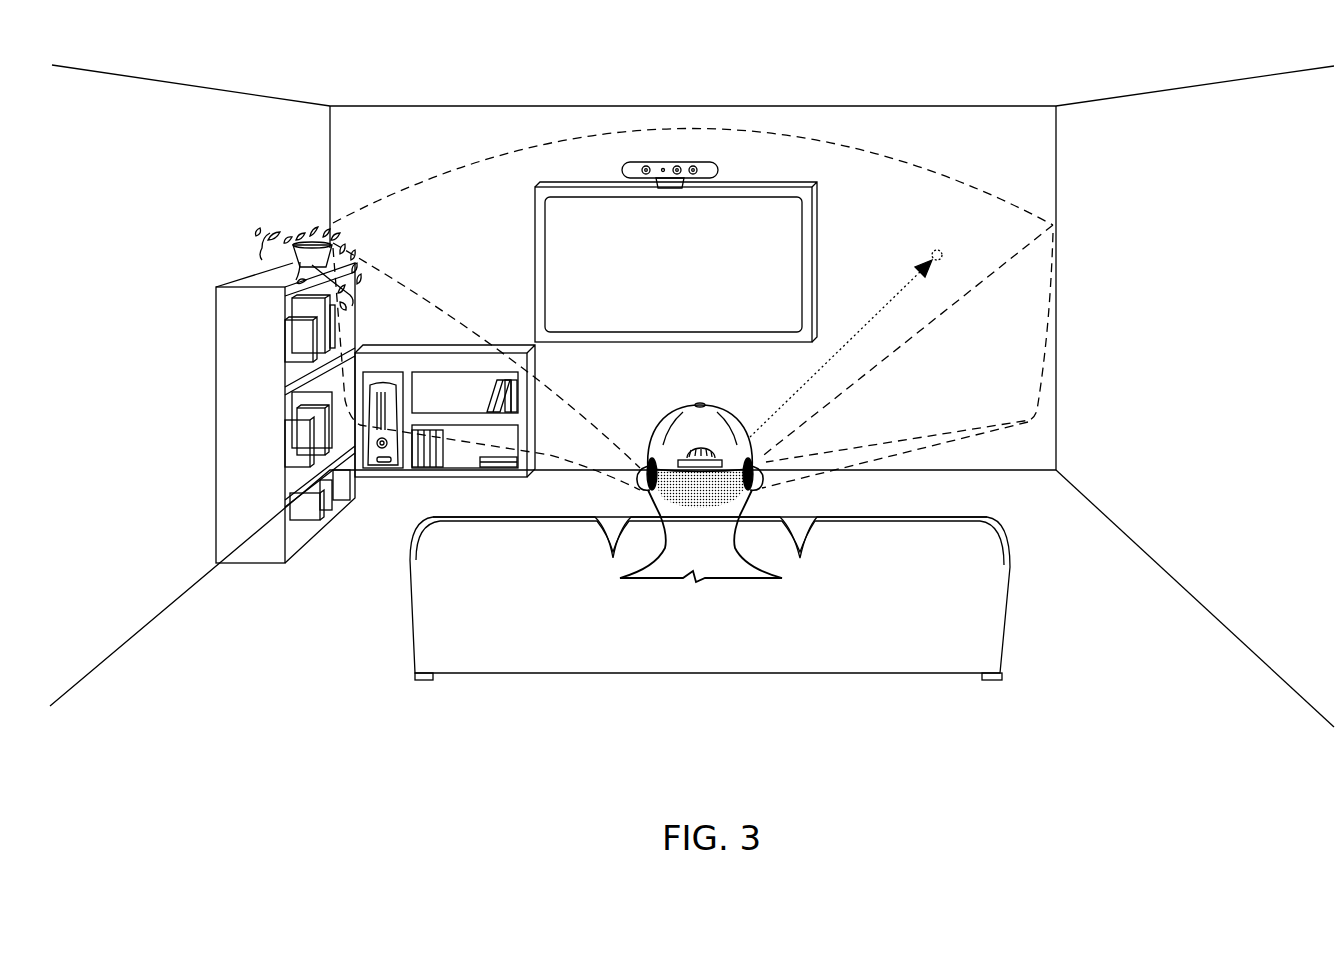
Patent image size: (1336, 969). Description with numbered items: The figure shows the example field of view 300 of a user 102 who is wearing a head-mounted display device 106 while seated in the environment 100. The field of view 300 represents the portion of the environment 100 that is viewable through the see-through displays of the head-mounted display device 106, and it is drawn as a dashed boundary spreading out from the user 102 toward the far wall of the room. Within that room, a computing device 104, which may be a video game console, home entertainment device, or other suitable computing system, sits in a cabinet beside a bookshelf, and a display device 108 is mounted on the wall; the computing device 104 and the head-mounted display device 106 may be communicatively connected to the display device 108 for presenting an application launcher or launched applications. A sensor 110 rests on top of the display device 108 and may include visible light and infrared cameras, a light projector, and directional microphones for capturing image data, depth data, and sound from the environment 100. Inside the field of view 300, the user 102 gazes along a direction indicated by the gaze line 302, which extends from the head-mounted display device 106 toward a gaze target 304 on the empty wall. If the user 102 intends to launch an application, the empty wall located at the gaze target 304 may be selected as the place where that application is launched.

The environment 100 is at (866, 95).
The user 102 is at (715, 558).
The computing device 104 is at (383, 470).
The head-mounted display device 106 is at (755, 460).
The display device 108 is at (818, 192).
The sensor 110 is at (702, 163).
The field of view 300 is at (460, 163).
The gaze line 302 is at (903, 288).
The gaze target 304 is at (932, 253).